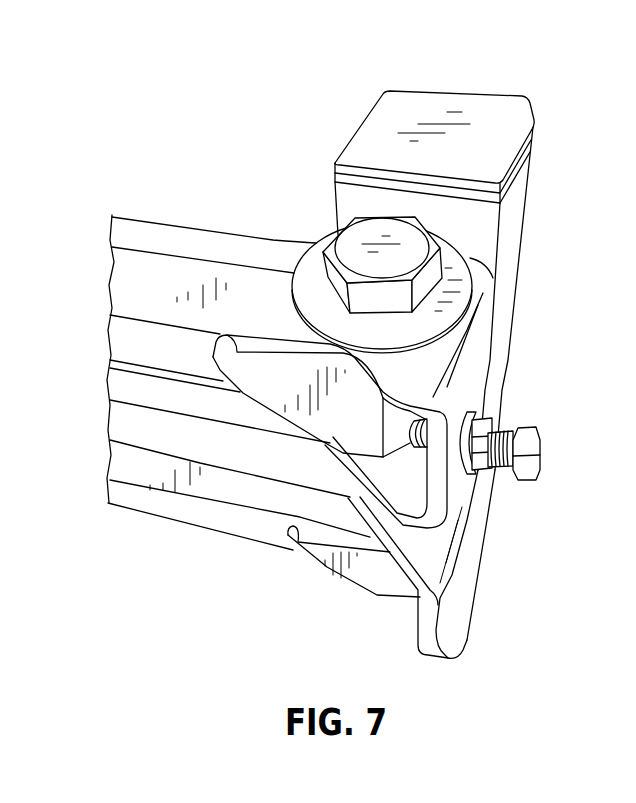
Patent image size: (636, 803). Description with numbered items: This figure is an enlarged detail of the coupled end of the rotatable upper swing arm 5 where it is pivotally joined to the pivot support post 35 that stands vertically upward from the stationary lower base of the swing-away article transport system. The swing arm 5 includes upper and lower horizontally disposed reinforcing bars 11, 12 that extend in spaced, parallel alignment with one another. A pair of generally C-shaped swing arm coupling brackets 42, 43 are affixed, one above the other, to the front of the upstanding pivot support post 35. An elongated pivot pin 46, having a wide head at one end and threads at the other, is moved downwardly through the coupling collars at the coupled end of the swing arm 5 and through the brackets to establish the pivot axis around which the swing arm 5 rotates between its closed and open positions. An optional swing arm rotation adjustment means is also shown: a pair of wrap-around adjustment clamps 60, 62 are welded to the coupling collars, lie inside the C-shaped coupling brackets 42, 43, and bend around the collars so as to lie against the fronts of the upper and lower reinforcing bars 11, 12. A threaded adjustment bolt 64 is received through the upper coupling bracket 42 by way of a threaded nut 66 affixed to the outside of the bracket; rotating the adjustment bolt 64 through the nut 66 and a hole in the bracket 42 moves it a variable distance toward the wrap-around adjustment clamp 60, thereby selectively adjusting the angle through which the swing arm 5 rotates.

The rotatable upper swing arm 5 is at (122, 516).
The upper swing arm reinforcing bar 11 is at (168, 272).
The lower swing arm reinforcing bar 12 is at (208, 487).
The pivot support post 35 is at (444, 104).
The swing arm coupling bracket 42 is at (475, 347).
The swing arm coupling bracket 43 is at (453, 570).
The pivot pin 46 is at (410, 243).
The wrap-around adjustment clamp 60 is at (280, 365).
The wrap-around adjustment clamp 62 is at (348, 577).
The threaded adjustment bolt 64 is at (533, 456).
The threaded nut 66 is at (492, 418).